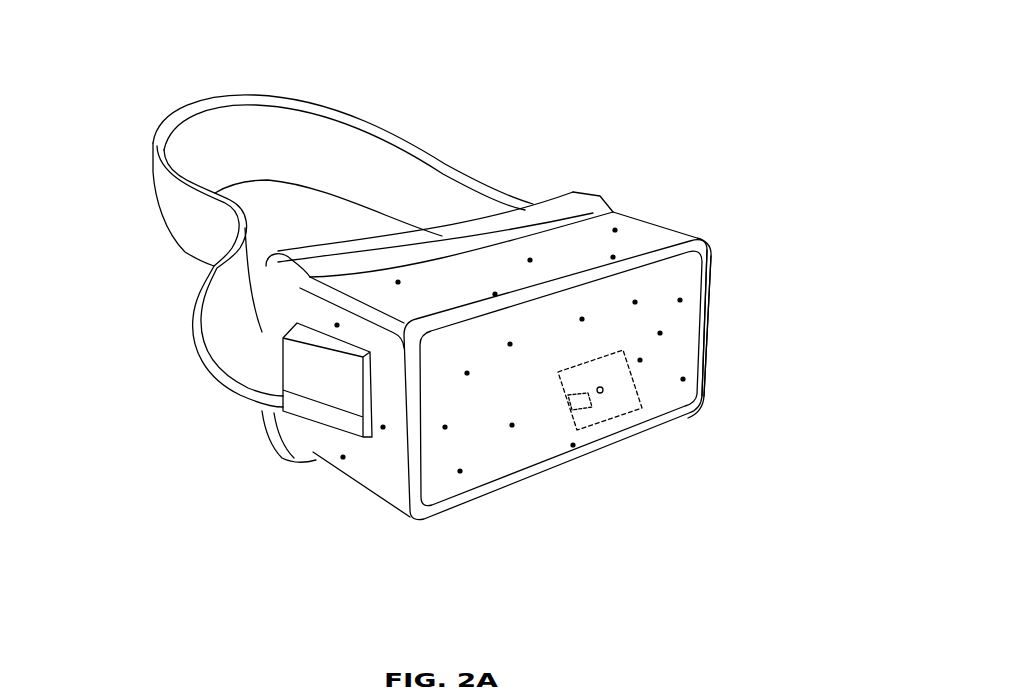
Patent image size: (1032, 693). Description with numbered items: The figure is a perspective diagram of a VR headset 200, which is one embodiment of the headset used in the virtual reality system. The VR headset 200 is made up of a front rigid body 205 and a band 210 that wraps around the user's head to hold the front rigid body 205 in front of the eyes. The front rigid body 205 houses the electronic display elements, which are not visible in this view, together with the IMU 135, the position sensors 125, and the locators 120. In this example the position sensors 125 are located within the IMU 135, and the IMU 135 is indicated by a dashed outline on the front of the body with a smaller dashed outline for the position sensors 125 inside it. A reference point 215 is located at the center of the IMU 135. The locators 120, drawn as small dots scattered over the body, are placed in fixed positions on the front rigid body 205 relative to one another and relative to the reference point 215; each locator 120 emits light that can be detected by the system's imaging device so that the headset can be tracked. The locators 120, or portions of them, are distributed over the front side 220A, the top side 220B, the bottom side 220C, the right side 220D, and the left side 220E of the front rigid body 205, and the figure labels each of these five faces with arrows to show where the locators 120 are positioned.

The VR headset 200 is at (43, 103).
The band 210 is at (440, 165).
The front rigid body 205 is at (707, 243).
The front side 220A is at (446, 504).
The top side 220B is at (362, 282).
The bottom side 220C is at (333, 505).
The right side 220D is at (374, 473).
The left side 220E is at (688, 218).
The locators 120 is at (698, 371).
The position sensors 125 is at (576, 420).
The IMU 135 is at (658, 411).
The reference point 215 is at (608, 411).